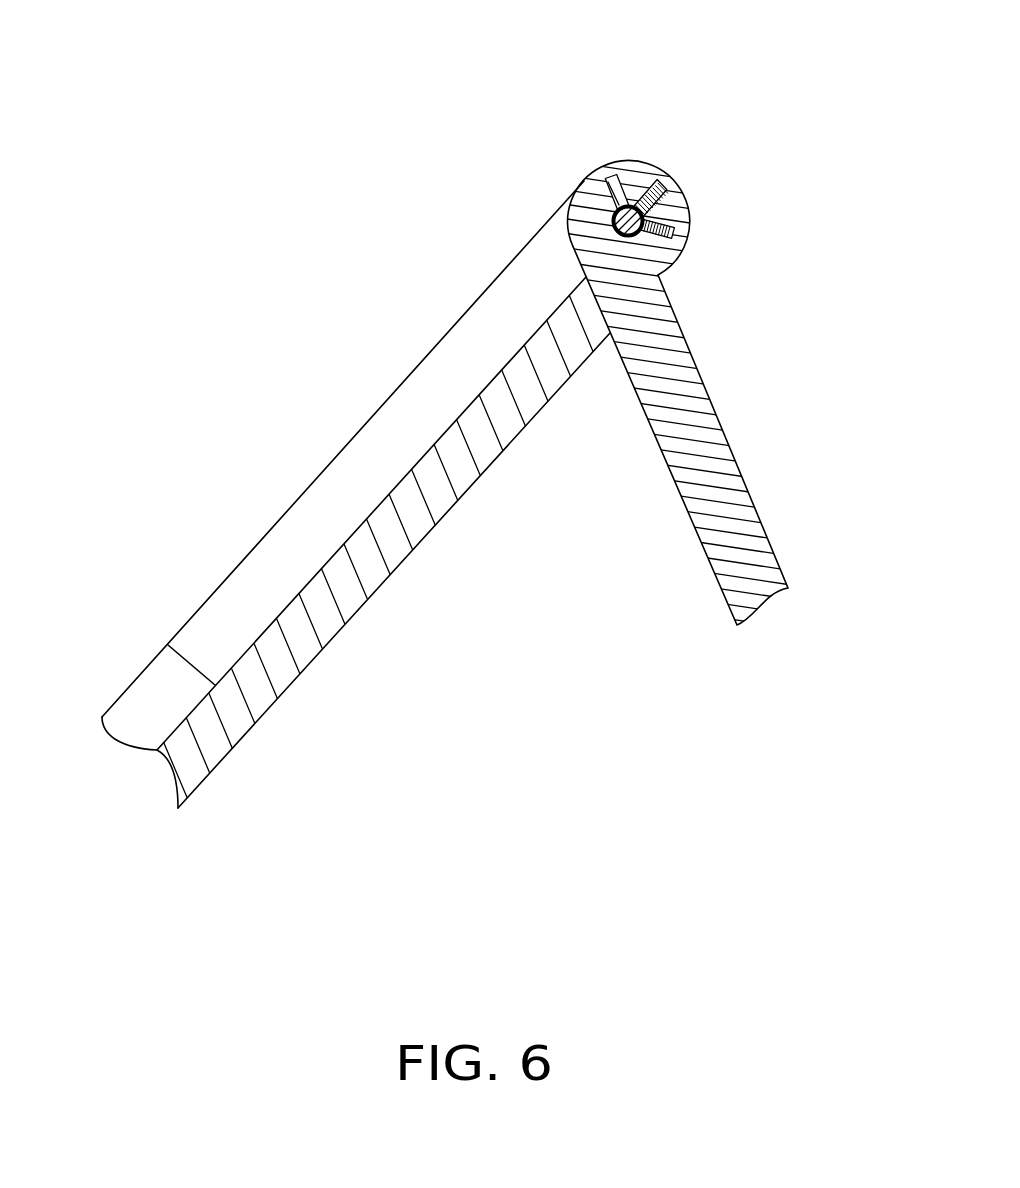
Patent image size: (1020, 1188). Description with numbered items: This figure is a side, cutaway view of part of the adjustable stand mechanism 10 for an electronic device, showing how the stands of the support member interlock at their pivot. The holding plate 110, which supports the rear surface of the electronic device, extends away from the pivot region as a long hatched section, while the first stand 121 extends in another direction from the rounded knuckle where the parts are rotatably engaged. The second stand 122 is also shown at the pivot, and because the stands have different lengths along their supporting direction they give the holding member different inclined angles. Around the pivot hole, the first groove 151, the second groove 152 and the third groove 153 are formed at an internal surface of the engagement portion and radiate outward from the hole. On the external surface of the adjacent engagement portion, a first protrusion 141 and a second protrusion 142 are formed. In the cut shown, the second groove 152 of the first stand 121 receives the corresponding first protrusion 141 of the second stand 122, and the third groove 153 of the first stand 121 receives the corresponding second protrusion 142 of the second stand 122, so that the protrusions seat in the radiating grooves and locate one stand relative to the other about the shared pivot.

The adjustable stand mechanism 10 is at (473, 70).
The holding plate 110 is at (347, 595).
The first stand 121 is at (732, 512).
The second stand 122 is at (295, 547).
The first protrusion 141 is at (653, 200).
The second protrusion 142 is at (675, 232).
The first groove 151 is at (610, 185).
The second groove 152 is at (652, 204).
The third groove 153 is at (657, 274).